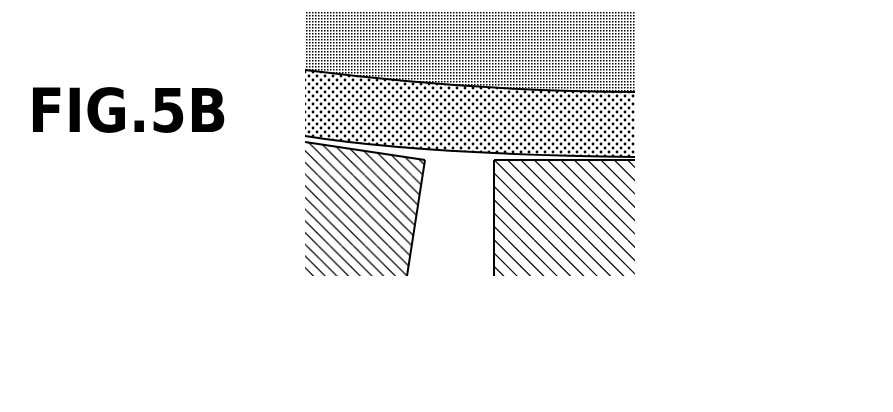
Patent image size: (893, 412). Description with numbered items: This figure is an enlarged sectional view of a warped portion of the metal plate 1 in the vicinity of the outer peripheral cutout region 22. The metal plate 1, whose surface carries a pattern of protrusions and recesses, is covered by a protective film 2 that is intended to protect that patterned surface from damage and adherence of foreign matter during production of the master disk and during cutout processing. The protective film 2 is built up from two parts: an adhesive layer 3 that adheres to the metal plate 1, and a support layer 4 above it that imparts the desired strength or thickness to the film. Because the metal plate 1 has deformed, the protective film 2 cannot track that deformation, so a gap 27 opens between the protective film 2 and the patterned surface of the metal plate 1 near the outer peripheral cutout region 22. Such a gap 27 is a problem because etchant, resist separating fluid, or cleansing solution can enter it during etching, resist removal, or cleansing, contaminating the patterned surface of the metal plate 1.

The metal plate 1 is at (625, 217).
The protective film 2 is at (688, 43).
The adhesive layer 3 is at (636, 127).
The support layer 4 is at (636, 52).
The outer peripheral cutout region 22 is at (456, 268).
The gap 27 is at (493, 155).